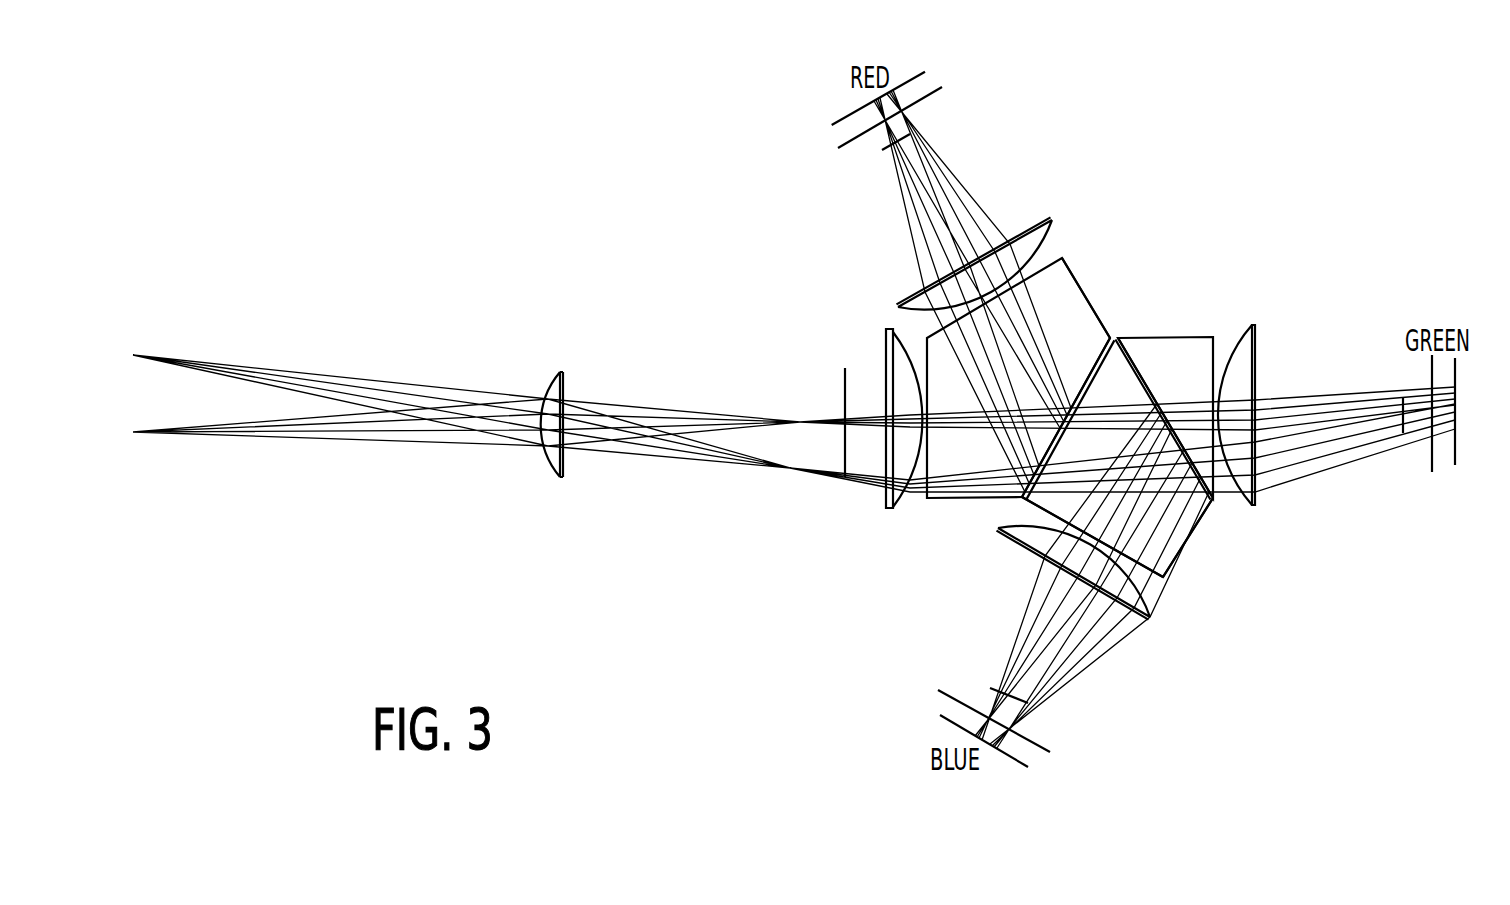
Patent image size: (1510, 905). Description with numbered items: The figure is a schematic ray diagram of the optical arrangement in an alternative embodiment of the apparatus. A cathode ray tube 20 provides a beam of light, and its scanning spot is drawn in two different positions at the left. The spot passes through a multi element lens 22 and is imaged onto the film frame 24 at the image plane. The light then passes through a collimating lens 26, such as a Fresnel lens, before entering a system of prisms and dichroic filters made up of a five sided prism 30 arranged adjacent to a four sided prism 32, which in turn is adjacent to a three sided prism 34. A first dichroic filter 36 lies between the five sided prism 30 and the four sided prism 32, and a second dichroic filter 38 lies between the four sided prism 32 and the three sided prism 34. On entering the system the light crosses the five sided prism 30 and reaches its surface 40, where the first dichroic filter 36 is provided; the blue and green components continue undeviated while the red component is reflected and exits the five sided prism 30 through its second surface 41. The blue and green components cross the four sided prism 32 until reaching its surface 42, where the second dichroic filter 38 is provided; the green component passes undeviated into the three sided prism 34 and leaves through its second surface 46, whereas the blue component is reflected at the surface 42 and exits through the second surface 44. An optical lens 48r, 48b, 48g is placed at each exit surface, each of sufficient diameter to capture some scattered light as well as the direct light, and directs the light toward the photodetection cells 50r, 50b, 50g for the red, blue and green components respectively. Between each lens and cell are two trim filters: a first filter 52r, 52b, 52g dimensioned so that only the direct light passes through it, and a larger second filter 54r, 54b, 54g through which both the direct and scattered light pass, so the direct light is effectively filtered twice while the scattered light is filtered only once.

The cathode ray tube 20 is at (135, 355).
The multi element lens 22 is at (556, 372).
The film frame 24 is at (843, 437).
The collimating lens 26 is at (888, 508).
The first dichroic filter 36 is at (1020, 500).
The five sided prism 30 is at (1070, 268).
The second surface 41 is at (1062, 258).
The surface 40 is at (1095, 355).
The three sided prism 34 is at (1213, 337).
The surface 42 is at (1125, 360).
The four sided prism 32 is at (1185, 538).
The second surface 44 is at (1166, 580).
The second dichroic filter 38 is at (1213, 500).
The second surface 46 is at (1218, 345).
The optical lens 48g is at (1257, 363).
The first narrow band pass filter 52g is at (1403, 432).
The second narrow band pass filter 54g is at (1432, 472).
The photodetection cell 50g is at (1455, 466).
The optical lens 48r is at (1052, 220).
The photodetection cell 50r is at (925, 72).
The second high wavelength pass filter 54r is at (942, 88).
The first high wavelength pass filter 52r is at (912, 135).
The optical lens 48b is at (1150, 618).
The first low wavelength pass filter 52b is at (1028, 703).
The second low wavelength pass filter 54b is at (1042, 745).
The photodetection cell 50b is at (938, 714).